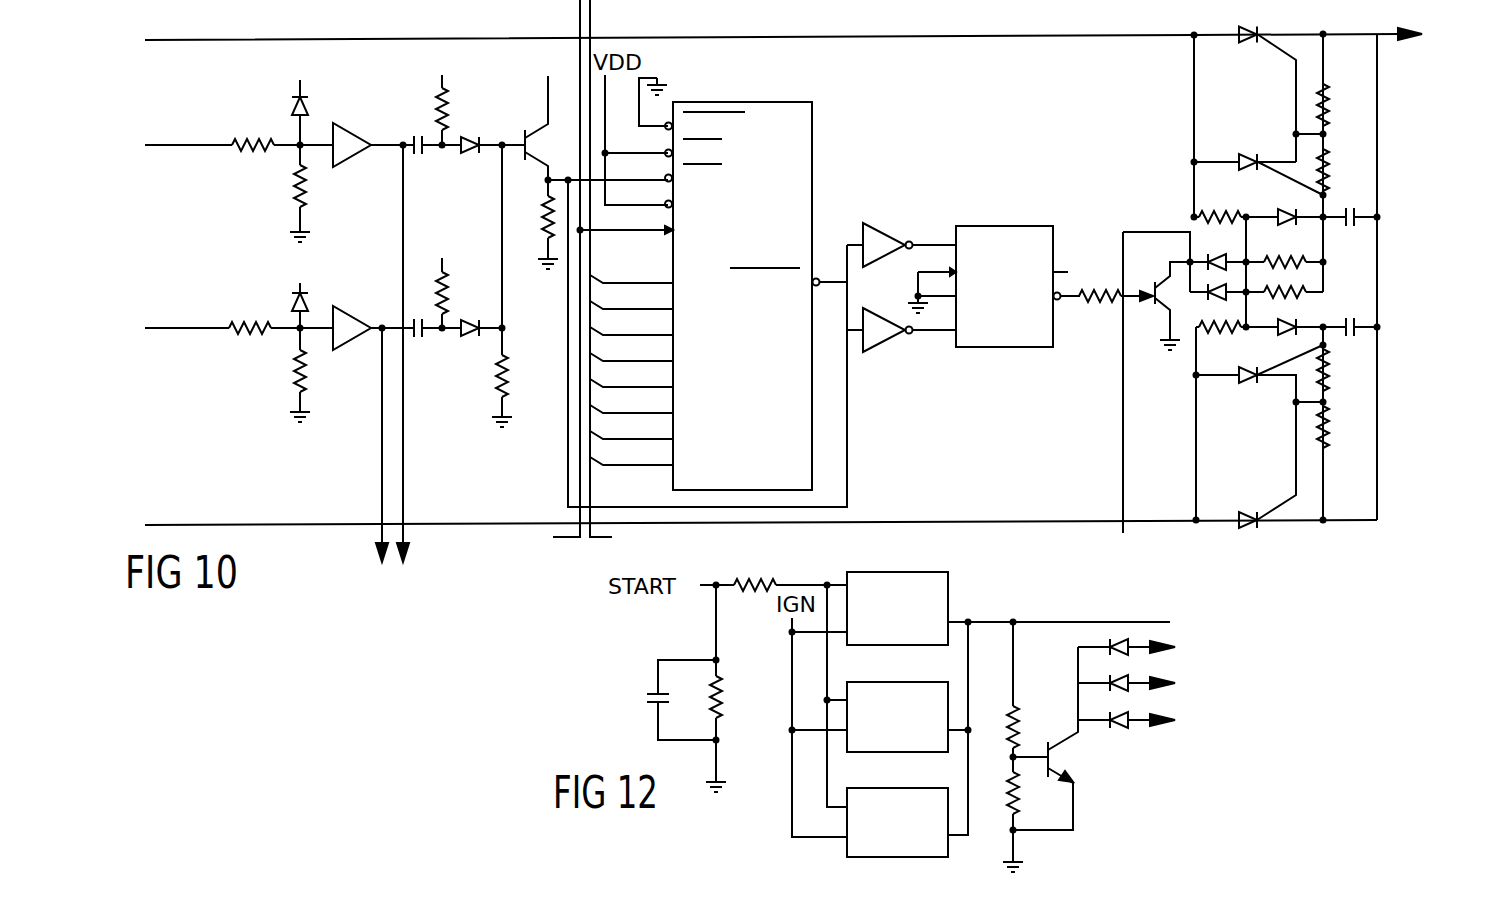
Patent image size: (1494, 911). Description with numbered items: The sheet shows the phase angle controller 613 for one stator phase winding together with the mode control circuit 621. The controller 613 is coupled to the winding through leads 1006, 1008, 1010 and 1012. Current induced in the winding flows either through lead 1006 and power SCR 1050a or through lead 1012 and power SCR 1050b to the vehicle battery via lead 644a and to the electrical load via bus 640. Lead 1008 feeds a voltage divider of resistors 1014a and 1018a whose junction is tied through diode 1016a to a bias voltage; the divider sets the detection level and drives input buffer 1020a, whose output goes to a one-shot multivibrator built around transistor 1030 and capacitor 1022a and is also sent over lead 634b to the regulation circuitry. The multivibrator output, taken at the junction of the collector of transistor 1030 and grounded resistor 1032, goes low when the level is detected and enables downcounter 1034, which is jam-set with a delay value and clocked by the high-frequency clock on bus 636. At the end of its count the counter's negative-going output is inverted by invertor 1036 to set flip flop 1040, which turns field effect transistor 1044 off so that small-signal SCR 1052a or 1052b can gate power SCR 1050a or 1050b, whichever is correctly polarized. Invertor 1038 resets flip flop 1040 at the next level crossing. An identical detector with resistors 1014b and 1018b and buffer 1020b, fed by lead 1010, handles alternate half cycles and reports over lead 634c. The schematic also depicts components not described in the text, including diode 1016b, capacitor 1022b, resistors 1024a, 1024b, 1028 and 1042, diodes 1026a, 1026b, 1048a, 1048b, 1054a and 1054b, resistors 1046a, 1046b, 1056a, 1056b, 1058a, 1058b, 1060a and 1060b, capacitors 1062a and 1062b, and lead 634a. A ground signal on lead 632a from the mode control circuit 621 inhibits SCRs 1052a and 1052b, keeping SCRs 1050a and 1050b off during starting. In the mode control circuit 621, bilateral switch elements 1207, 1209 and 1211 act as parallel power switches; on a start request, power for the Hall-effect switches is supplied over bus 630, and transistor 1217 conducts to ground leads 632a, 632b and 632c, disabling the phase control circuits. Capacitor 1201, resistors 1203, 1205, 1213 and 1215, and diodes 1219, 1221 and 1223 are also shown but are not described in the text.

In FIG. 10, the lead 1006 is at (152, 40).
In FIG. 10, the lead 1008 is at (160, 148).
In FIG. 10, the lead 1010 is at (175, 328).
In FIG. 10, the lead 1012 is at (183, 524).
In FIG. 10, the resistor 1014a is at (257, 143).
In FIG. 10, the resistor 1014b is at (245, 335).
In FIG. 10, the diode 1016a is at (294, 108).
In FIG. 10, the diode 1016b is at (290, 298).
In FIG. 10, the resistor 1018a is at (294, 182).
In FIG. 10, the resistor 1018b is at (293, 375).
In FIG. 10, the input buffer 1020a is at (355, 165).
In FIG. 10, the buffer 1020b is at (355, 312).
In FIG. 10, the capacitor 1022a is at (418, 152).
In FIG. 10, the capacitor 1022b is at (420, 340).
In FIG. 10, the resistor 1024a is at (435, 105).
In FIG. 10, the resistor 1024b is at (487, 222).
In FIG. 10, the diode 1026a is at (470, 136).
In FIG. 10, the diode 1026b is at (470, 340).
In FIG. 10, the resistor 1028 is at (507, 385).
In FIG. 10, the transistor 1030 is at (518, 128).
In FIG. 10, the resistor 1032 is at (545, 235).
In FIG. 10, the downcounter 1034 is at (770, 102).
In FIG. 10, the invertor 1036 is at (880, 225).
In FIG. 10, the invertor 1038 is at (880, 352).
In FIG. 10, the set-reset flip flop 1040 is at (1000, 226).
In FIG. 10, the resistor 1042 is at (1098, 300).
In FIG. 10, the field effect transistor 1044 is at (1162, 312).
In FIG. 10, the resistor 1046a is at (1218, 255).
In FIG. 10, the diode 1046b is at (1230, 287).
In FIG. 10, the diode 1048a is at (1193, 205).
In FIG. 10, the diode 1048b is at (1196, 375).
In FIG. 10, the power SCR 1050a is at (1240, 28).
In FIG. 10, the power SCR 1050b is at (1250, 525).
In FIG. 10, the small signal SCR 1052a is at (1250, 155).
In FIG. 10, the small signal SCR 1052b is at (1250, 380).
In FIG. 10, the diode 1054a is at (1290, 212).
In FIG. 10, the diode 1054b is at (1290, 332).
In FIG. 10, the resistor 1056a is at (1295, 258).
In FIG. 10, the resistor 1056b is at (1300, 295).
In FIG. 10, the resistor 1058a is at (1320, 92).
In FIG. 10, the resistor 1058b is at (1322, 442).
In FIG. 10, the resistor 1060a is at (1330, 175).
In FIG. 10, the resistor 1060b is at (1330, 365).
In FIG. 10, the capacitor 1062a is at (1358, 210).
In FIG. 10, the capacitor 1062b is at (1358, 322).
In FIG. 10, the output line 634a is at (612, 537).
In FIG. 10, the lead 634b is at (408, 538).
In FIG. 10, the lead 634c is at (378, 538).
In FIG. 10, the bus 636 is at (553, 540).
In FIG. 10, the lead 632a is at (1123, 530).
In FIG. 12, the lead 632a is at (1175, 645).
In FIG. 12, the lead 632b is at (1175, 685).
In FIG. 12, the lead 632c is at (1175, 720).
In FIG. 10, the bus 640 is at (1395, 36).
In FIG. 10, the lead 644a is at (1355, 34).
In FIG. 10, the phase angle controller 613 is at (330, 585).
In FIG. 12, the mode control circuit 621 is at (628, 668).
In FIG. 12, the bus 630 is at (1170, 622).
In FIG. 12, the capacitor 1201 is at (652, 703).
In FIG. 12, the resistor 1203 is at (735, 715).
In FIG. 12, the resistor 1205 is at (752, 598).
In FIG. 12, the bilateral switch element 1207 is at (958, 600).
In FIG. 12, the bilateral switch element 1209 is at (880, 682).
In FIG. 12, the bilateral switch element 1211 is at (890, 788).
In FIG. 12, the resistor 1213 is at (1020, 720).
In FIG. 12, the resistor 1215 is at (1005, 810).
In FIG. 12, the transistor 1217 is at (1070, 768).
In FIG. 12, the diode 1219 is at (1105, 645).
In FIG. 12, the diode 1221 is at (1175, 683).
In FIG. 12, the diode 1223 is at (1128, 725).